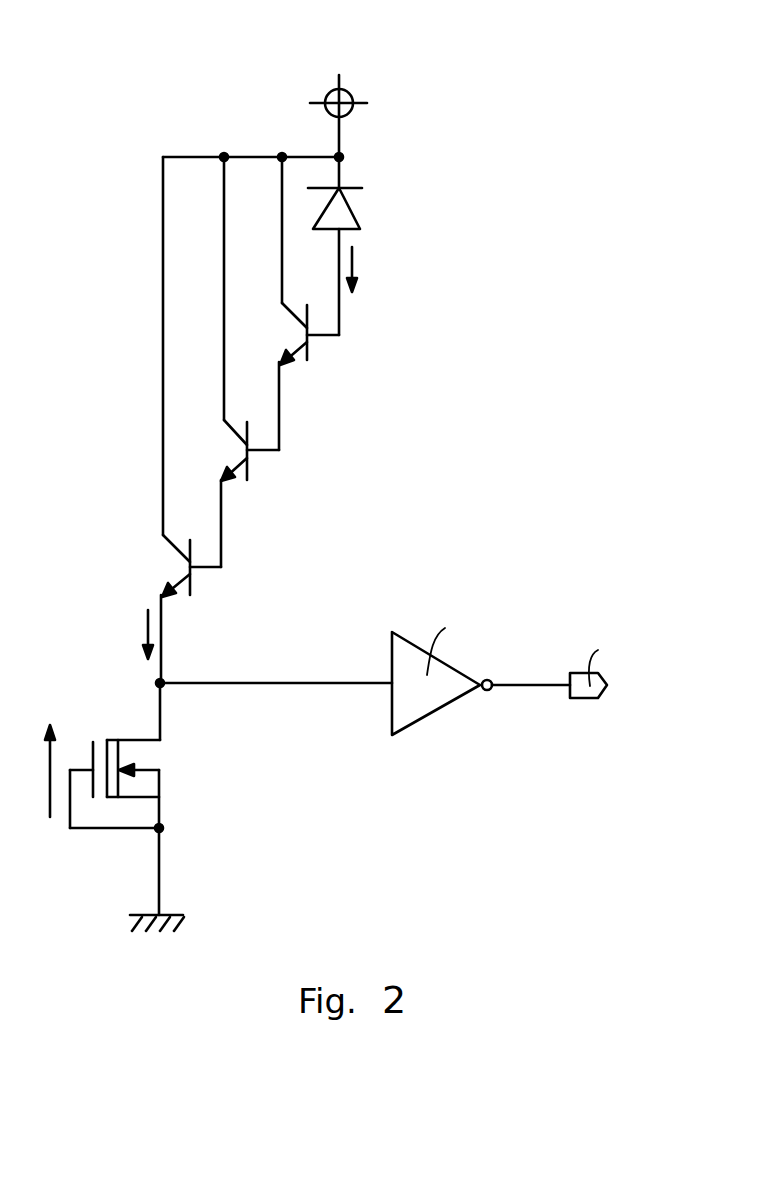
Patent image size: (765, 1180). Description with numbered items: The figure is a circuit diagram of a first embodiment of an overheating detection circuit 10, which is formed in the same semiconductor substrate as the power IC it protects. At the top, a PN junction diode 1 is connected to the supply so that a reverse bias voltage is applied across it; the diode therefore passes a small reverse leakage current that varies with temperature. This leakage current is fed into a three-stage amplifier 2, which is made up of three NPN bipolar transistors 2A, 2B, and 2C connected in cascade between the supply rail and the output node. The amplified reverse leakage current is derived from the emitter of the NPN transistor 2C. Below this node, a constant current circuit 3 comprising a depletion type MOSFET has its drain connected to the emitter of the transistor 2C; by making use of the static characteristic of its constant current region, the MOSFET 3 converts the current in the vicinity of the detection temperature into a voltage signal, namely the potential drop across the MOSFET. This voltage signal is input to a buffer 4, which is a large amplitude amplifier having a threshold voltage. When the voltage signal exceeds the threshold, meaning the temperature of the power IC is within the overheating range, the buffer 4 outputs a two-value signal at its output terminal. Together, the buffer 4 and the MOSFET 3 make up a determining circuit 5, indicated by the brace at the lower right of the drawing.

The current detecting circuit 10 is at (88, 47).
The PN junction diode 1 is at (347, 222).
The 3-stage amplifier 2 is at (455, 312).
The NPN bipolar transistor 2A is at (292, 337).
The NPN bipolar transistor 2B is at (231, 437).
The NPN bipolar transistor 2C is at (178, 546).
The constant current circuit 3 is at (148, 756).
The buffer 4 is at (400, 710).
The determining circuit 5 is at (490, 772).